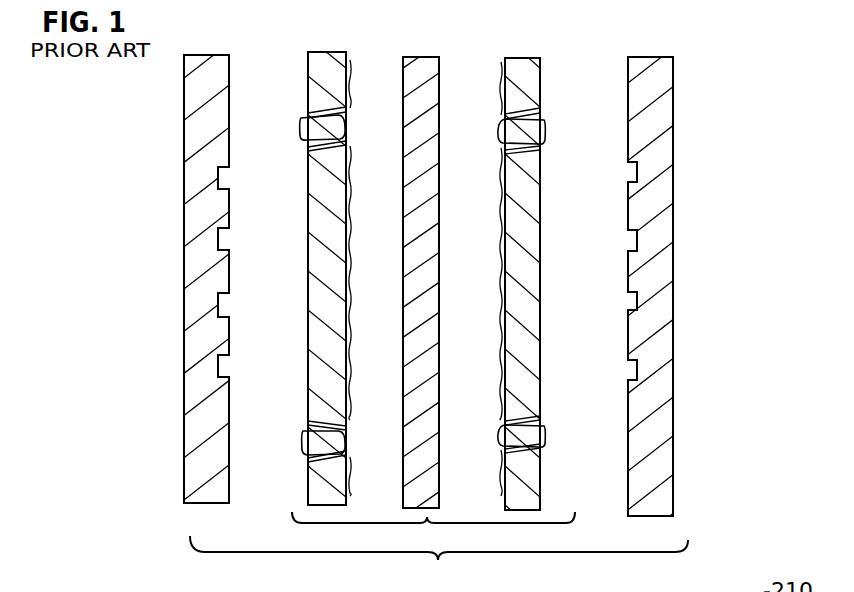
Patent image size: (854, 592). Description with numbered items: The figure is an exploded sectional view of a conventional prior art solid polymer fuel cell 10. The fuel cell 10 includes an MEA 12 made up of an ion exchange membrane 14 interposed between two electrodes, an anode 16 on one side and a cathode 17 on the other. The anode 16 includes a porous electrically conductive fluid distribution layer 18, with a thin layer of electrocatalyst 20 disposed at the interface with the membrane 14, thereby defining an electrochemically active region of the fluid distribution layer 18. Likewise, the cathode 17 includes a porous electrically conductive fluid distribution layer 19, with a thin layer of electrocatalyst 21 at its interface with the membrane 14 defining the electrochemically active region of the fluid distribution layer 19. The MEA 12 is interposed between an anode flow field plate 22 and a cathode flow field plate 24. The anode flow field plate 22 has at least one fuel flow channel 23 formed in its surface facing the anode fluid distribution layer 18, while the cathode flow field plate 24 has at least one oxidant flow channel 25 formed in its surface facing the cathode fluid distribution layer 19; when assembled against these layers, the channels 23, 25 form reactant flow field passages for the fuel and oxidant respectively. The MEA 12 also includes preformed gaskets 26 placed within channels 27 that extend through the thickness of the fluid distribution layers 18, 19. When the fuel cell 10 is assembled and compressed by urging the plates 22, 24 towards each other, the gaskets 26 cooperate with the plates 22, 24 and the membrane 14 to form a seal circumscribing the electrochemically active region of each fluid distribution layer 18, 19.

The solid polymer fuel cell 10 is at (439, 564).
The MEA 12 is at (425, 525).
The ion exchange membrane 14 is at (434, 508).
The anode 16 is at (318, 492).
The cathode 17 is at (543, 509).
The fluid distribution layer 18 is at (318, 54).
The fluid distribution layer 19 is at (522, 58).
The electrocatalyst 20 is at (352, 140).
The electrocatalyst 21 is at (497, 148).
The anode flow field plate 22 is at (198, 475).
The fuel flow channel 23 is at (216, 180).
The cathode flow field plate 24 is at (668, 476).
The oxidant flow channel 25 is at (650, 236).
The preformed gasket 26 is at (299, 128).
The channel 27 is at (310, 142).